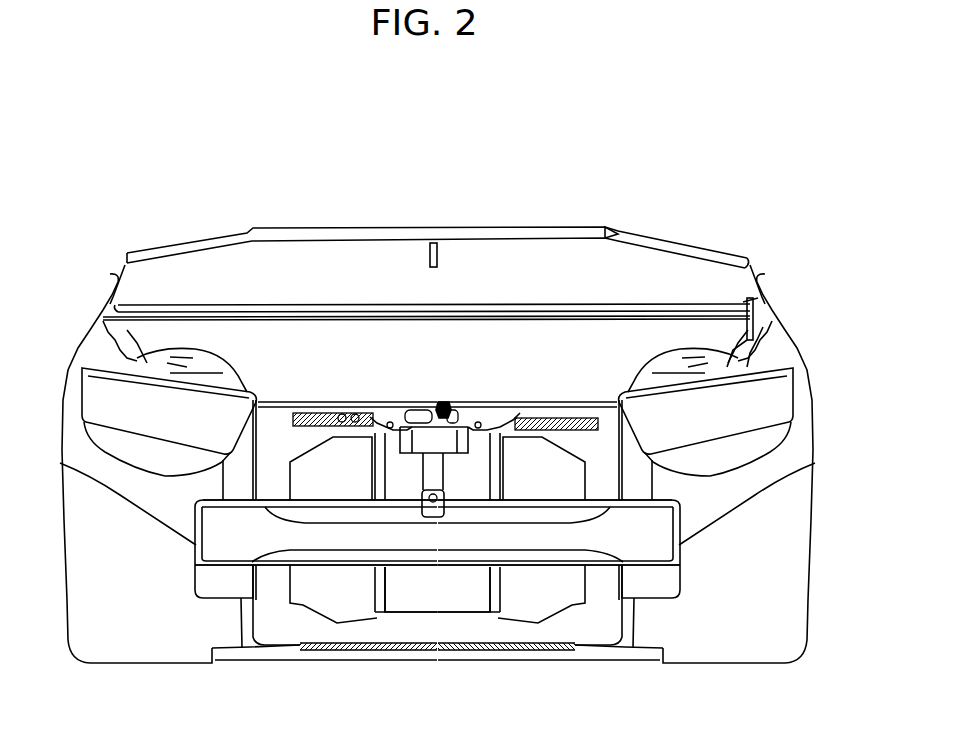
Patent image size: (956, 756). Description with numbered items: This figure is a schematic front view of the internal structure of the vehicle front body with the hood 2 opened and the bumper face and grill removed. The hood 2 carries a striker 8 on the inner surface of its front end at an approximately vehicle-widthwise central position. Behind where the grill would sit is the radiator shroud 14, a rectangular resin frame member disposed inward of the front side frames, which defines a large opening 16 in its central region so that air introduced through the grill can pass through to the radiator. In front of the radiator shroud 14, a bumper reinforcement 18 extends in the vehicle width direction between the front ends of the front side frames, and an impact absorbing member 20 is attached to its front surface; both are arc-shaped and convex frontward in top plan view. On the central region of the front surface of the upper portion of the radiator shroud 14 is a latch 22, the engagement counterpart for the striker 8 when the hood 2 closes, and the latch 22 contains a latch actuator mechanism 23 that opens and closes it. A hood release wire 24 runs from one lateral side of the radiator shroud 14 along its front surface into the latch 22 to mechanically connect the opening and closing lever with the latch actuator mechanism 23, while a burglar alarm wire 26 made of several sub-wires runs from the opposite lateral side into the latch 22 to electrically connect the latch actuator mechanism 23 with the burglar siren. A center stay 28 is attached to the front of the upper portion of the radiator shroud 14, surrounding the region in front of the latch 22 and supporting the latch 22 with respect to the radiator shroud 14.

The hood 2 is at (710, 250).
The striker 8 is at (448, 247).
The radiator shroud 14 is at (598, 490).
The opening 16 is at (437, 592).
The bumper reinforcement 18 is at (528, 565).
The impact absorbing member 20 is at (363, 540).
The latch 22 is at (438, 402).
The latch actuator mechanism 23 is at (452, 392).
The hood release wire 24 is at (578, 427).
The burglar alarm wire 26 is at (332, 412).
The center stay 28 is at (403, 407).